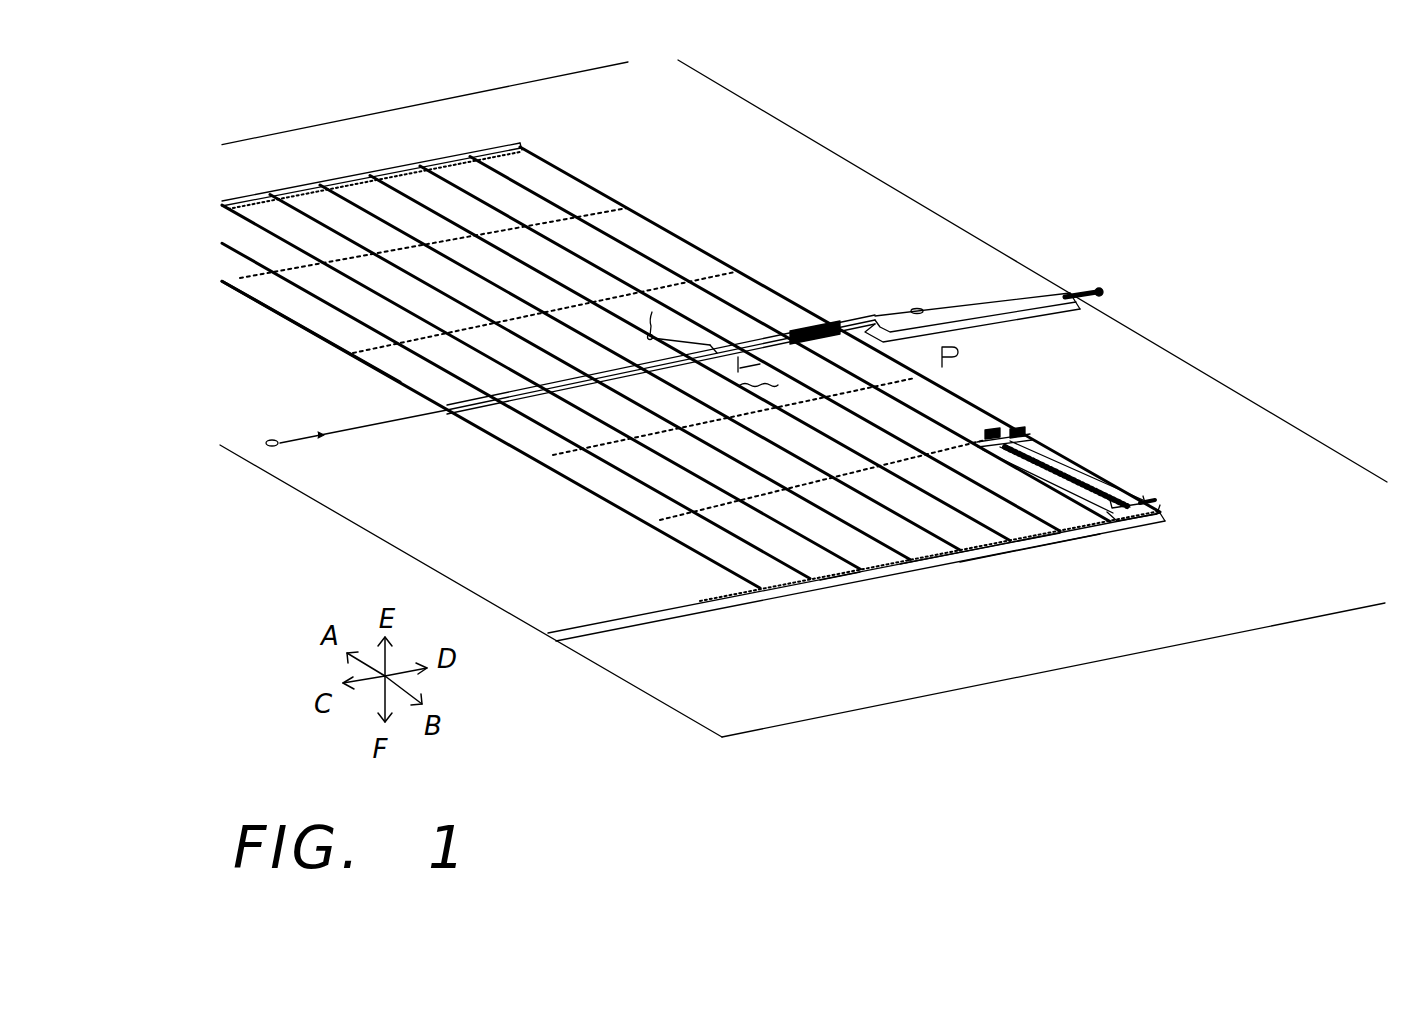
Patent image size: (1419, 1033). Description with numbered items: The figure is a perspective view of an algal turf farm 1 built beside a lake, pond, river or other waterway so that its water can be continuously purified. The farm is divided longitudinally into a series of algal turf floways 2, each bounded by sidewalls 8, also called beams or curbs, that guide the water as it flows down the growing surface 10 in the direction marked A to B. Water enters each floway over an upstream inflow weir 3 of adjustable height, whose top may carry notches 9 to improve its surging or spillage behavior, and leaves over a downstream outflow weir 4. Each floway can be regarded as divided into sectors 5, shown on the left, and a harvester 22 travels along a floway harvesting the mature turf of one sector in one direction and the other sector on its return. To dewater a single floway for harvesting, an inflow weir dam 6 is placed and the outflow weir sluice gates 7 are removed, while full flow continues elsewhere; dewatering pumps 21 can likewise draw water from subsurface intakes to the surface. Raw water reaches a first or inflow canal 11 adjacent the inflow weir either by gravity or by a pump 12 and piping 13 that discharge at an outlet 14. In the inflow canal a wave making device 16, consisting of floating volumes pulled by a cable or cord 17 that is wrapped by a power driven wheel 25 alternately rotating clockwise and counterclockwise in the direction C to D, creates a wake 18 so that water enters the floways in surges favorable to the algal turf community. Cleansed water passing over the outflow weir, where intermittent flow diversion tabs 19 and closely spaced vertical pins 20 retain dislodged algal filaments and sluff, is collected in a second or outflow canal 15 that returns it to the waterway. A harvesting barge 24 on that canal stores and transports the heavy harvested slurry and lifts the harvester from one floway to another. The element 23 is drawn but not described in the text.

The algal turf farm 1 is at (663, 230).
The algal turf floway 2 is at (600, 307).
The inflow weir 3 is at (715, 337).
The outflow weir 4 is at (783, 590).
The sectors 5 is at (515, 315).
The inflow weir dam 6 is at (840, 323).
The outflow weir sluice gates 7 is at (980, 548).
The sidewalls 8 is at (492, 360).
The notches 9 is at (527, 400).
The growing surface 10 is at (1030, 542).
The inflow canal 11 is at (748, 372).
The pump 12 is at (1093, 291).
The piping 13 is at (1065, 289).
The outlet 14 is at (1037, 307).
The outflow canal 15 is at (605, 630).
The wave making device 16 is at (653, 336).
The cable or cord 17 is at (575, 377).
The wake 18 is at (738, 372).
The intermittent flow diversion tabs 19 is at (903, 387).
The vertical pins 20 is at (837, 588).
The dewatering pumps 21 is at (954, 357).
The harvester 22 is at (1033, 435).
The track 23 is at (1090, 475).
The harvesting barge 24 is at (1157, 507).
The power driven wheel 25 is at (920, 308).